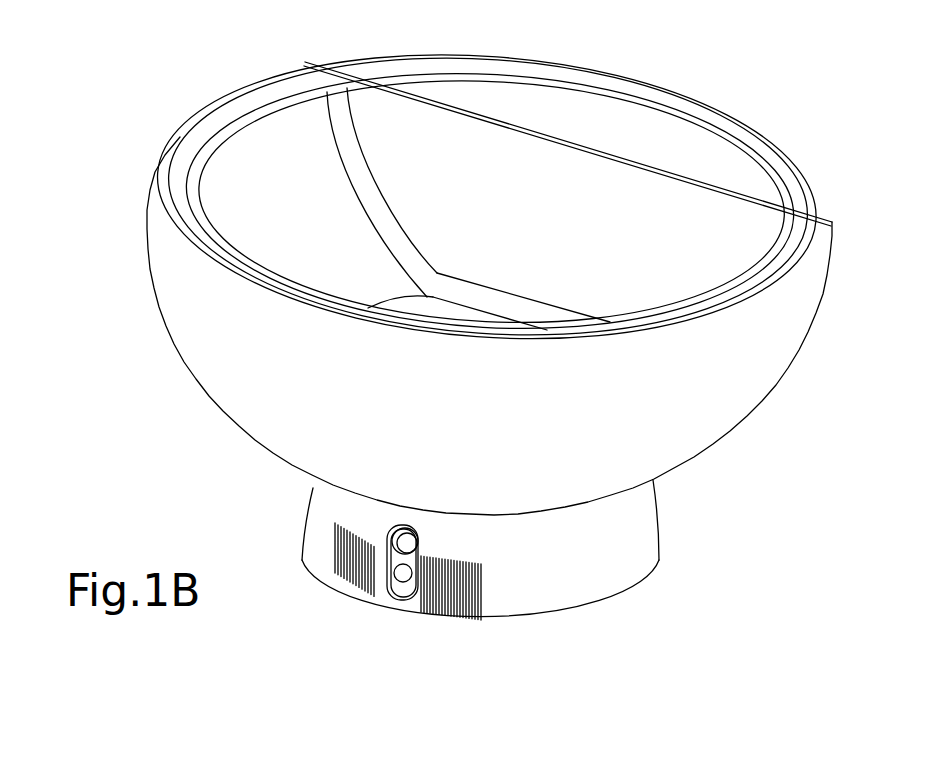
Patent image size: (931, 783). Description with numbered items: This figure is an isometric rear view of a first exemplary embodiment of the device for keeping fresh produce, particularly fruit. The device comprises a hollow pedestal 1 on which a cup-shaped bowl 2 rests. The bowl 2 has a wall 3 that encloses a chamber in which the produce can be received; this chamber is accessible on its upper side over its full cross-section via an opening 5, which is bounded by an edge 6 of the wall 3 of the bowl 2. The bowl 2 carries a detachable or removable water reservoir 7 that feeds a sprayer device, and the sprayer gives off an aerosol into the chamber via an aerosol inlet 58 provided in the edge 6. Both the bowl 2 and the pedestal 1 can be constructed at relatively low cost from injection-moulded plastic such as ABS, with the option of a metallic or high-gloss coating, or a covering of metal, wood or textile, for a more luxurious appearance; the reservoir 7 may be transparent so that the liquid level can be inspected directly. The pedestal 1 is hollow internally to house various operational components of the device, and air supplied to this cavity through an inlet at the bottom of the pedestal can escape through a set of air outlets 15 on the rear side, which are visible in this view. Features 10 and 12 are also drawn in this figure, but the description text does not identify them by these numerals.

The hollow pedestal 1 is at (610, 548).
The cup-shaped bowl 2 is at (133, 318).
The wall 3 is at (722, 402).
The opening 5 is at (743, 291).
The edge 6 is at (164, 196).
The water reservoir 7 is at (648, 132).
The power socket 10 is at (398, 579).
The bar 12 is at (568, 113).
The air outlets 15 is at (343, 568).
The aerosol inlet 58 is at (240, 124).